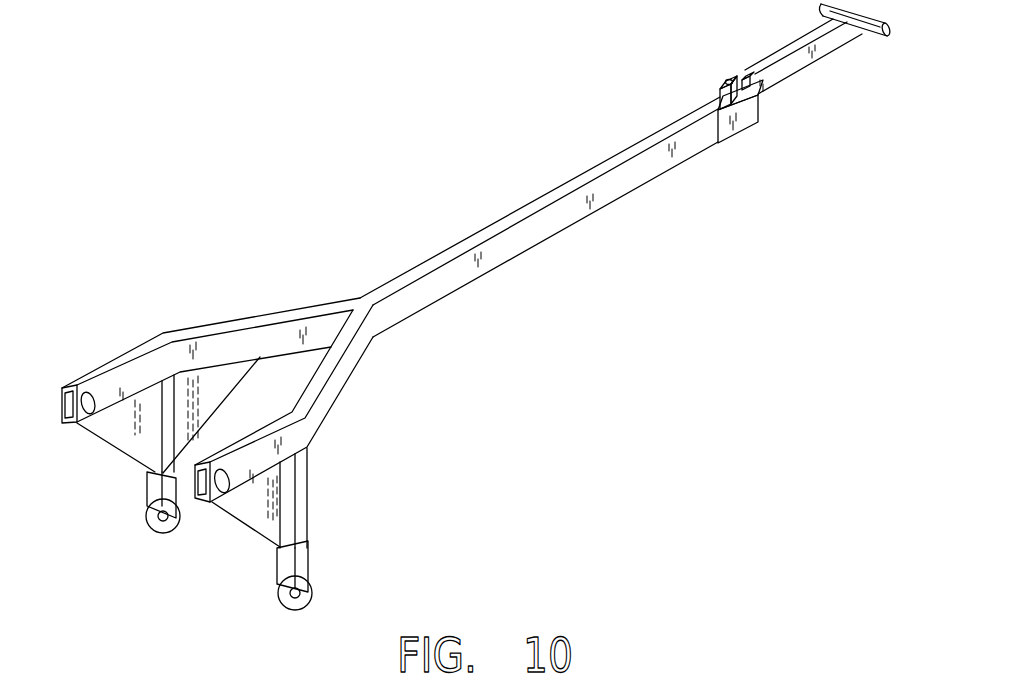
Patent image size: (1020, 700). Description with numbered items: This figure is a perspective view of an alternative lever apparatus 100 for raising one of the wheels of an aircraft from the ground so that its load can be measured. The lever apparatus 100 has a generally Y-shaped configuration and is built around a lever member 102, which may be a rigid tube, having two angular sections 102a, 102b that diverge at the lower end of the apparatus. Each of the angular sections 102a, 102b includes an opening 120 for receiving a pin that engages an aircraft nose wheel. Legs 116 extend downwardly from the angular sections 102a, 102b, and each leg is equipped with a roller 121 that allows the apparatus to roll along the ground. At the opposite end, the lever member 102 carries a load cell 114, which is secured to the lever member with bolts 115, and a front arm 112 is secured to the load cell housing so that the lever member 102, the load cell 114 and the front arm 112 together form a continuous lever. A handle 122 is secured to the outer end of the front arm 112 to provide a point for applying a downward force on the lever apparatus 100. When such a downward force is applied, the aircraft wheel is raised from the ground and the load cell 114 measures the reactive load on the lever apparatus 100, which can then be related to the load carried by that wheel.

The lever apparatus 100 is at (268, 226).
The lever member 102 is at (549, 190).
The angular section 102a is at (267, 312).
The angular section 102b is at (338, 403).
The front arm 112 is at (807, 33).
The load cell 114 is at (752, 127).
The bolts 115 is at (740, 80).
The legs 116 is at (148, 493).
The openings 120 is at (90, 391).
The rollers 121 is at (150, 527).
The handle 122 is at (850, 18).